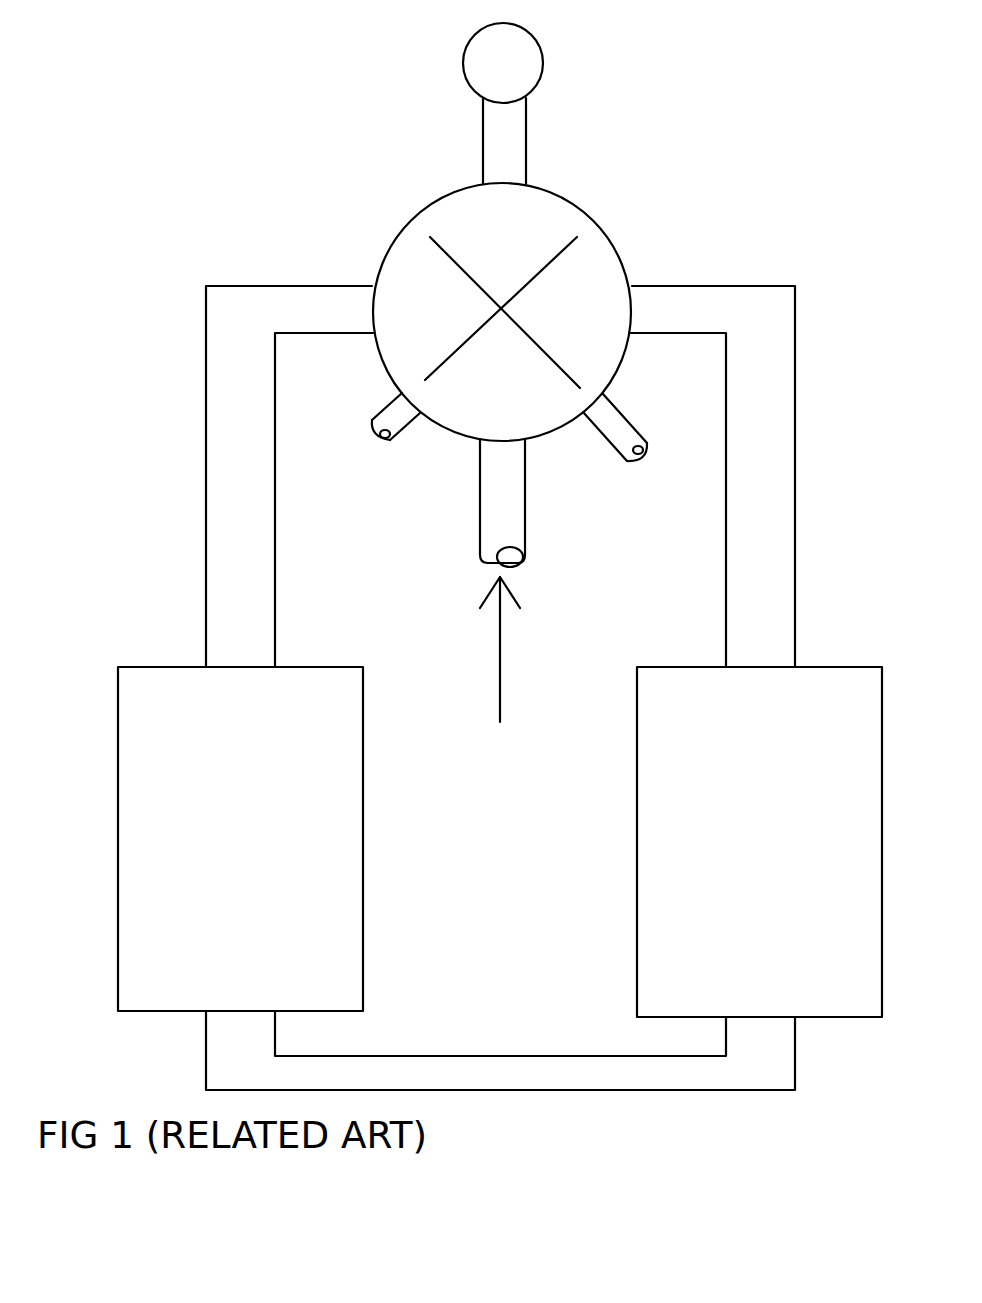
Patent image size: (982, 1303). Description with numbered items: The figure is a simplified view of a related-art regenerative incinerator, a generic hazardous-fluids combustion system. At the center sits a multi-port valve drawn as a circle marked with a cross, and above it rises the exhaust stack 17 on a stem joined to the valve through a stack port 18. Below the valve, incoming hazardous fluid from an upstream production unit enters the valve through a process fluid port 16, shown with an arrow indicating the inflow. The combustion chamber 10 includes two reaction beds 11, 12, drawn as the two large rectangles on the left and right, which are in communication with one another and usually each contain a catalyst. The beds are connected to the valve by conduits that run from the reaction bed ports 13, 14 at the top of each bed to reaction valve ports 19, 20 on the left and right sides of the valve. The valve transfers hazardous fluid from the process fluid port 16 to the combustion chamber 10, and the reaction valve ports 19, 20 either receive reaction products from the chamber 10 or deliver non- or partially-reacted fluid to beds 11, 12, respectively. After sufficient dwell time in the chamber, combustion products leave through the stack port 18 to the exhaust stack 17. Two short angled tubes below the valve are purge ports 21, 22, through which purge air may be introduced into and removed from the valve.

The combustion chamber 10 is at (252, 77).
The reaction bed 11 is at (244, 826).
The reaction bed 12 is at (768, 831).
The reaction bed port 13 is at (235, 665).
The reaction bed port 14 is at (758, 672).
The process fluid port 16 is at (525, 500).
The exhaust stack 17 is at (543, 60).
The stack port 18 is at (510, 184).
The reaction valve port 19 is at (363, 315).
The reaction valve port 20 is at (634, 317).
The purge port 21 is at (391, 437).
The purge port 22 is at (645, 452).